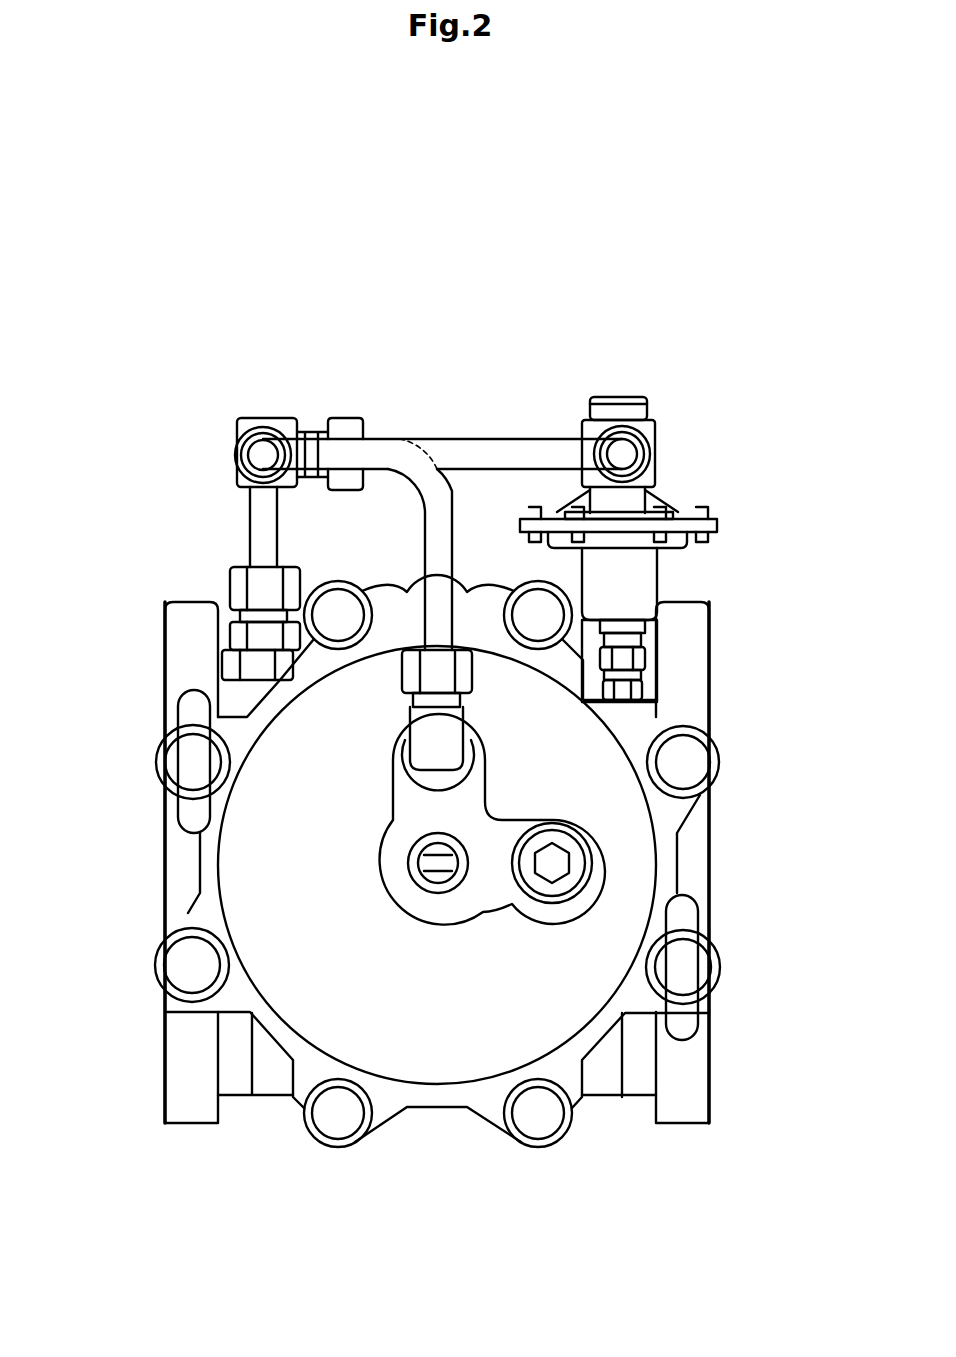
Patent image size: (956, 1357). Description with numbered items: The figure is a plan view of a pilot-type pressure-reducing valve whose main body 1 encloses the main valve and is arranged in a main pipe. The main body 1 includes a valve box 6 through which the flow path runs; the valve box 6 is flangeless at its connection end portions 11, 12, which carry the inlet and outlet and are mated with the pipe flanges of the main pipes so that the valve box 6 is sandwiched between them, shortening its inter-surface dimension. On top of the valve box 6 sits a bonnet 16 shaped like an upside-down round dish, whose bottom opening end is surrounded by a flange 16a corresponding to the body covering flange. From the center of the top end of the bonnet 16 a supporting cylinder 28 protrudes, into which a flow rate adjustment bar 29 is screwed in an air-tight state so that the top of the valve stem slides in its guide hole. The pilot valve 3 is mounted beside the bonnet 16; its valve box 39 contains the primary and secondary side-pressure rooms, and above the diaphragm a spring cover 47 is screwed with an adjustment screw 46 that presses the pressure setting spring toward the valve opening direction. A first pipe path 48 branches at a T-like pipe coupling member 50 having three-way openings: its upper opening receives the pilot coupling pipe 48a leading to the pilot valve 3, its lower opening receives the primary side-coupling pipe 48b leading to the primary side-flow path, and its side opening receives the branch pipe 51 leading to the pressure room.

The main body 1 is at (275, 1085).
The pilot valve 3 is at (660, 497).
The valve box 6 is at (595, 1088).
The connection end portion 11 is at (160, 1087).
The connection end portion 12 is at (710, 1100).
The bonnet 16 is at (277, 872).
The flange 16a is at (200, 913).
The supporting cylinder 28 is at (463, 880).
The flow rate adjustment bar 29 is at (430, 862).
The valve box 39 is at (640, 495).
The adjustment screw 46 is at (650, 683).
The spring cover 47 is at (637, 590).
The first pipe path 48 is at (155, 437).
The pilot coupling pipe 48a is at (262, 450).
The primary side-coupling pipe 48b is at (265, 530).
The pipe coupling member 50 is at (347, 428).
The branch pipe 51 is at (430, 557).